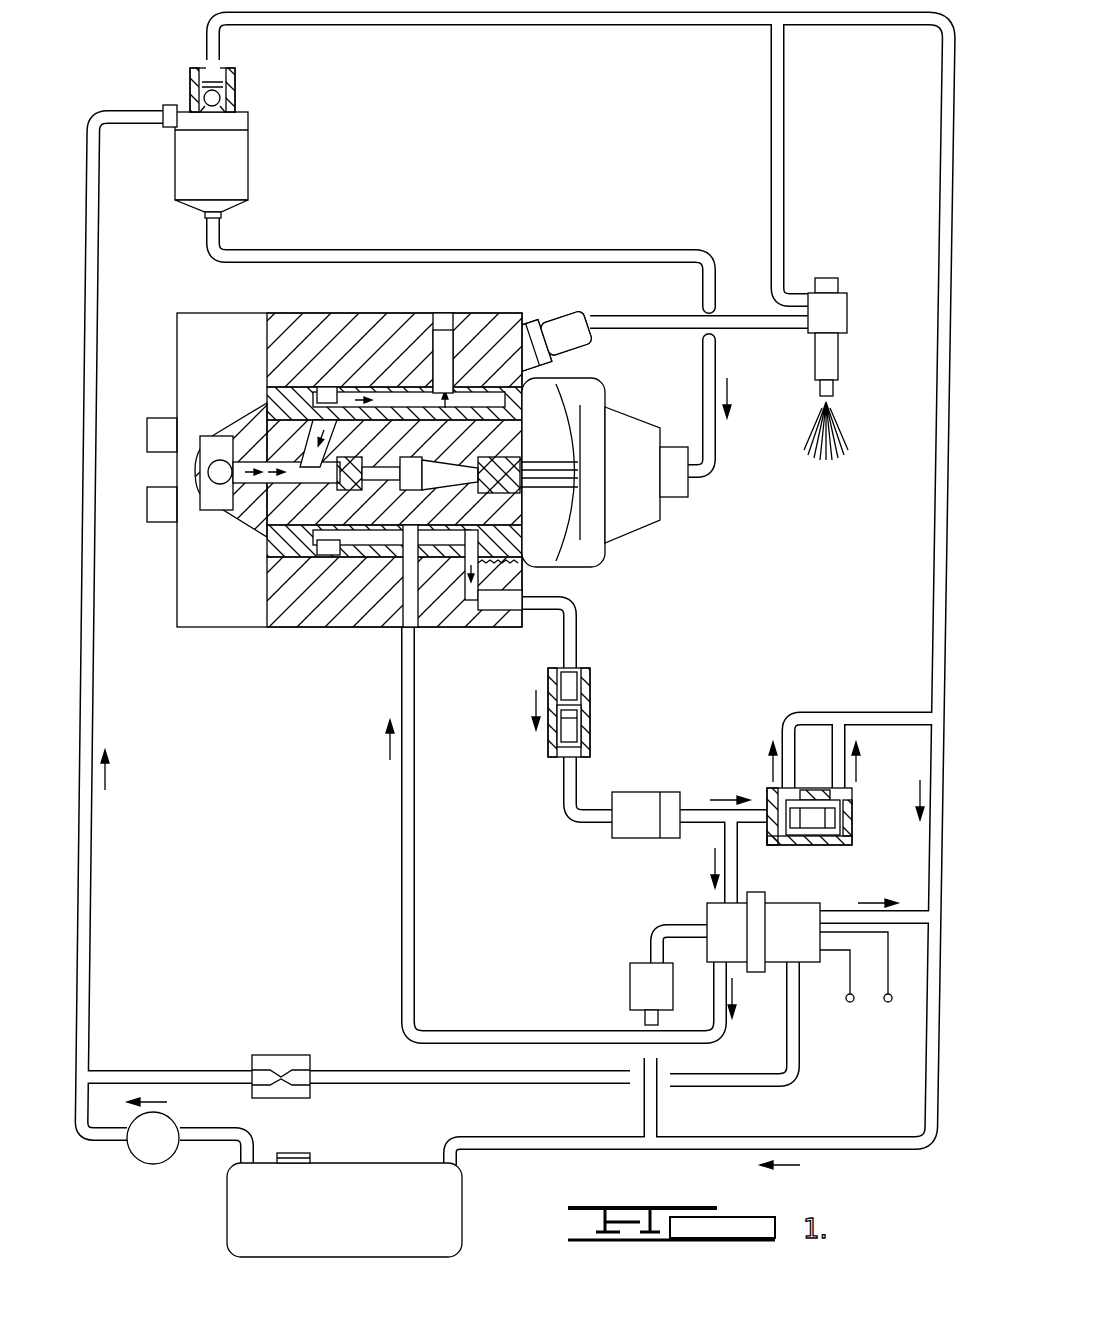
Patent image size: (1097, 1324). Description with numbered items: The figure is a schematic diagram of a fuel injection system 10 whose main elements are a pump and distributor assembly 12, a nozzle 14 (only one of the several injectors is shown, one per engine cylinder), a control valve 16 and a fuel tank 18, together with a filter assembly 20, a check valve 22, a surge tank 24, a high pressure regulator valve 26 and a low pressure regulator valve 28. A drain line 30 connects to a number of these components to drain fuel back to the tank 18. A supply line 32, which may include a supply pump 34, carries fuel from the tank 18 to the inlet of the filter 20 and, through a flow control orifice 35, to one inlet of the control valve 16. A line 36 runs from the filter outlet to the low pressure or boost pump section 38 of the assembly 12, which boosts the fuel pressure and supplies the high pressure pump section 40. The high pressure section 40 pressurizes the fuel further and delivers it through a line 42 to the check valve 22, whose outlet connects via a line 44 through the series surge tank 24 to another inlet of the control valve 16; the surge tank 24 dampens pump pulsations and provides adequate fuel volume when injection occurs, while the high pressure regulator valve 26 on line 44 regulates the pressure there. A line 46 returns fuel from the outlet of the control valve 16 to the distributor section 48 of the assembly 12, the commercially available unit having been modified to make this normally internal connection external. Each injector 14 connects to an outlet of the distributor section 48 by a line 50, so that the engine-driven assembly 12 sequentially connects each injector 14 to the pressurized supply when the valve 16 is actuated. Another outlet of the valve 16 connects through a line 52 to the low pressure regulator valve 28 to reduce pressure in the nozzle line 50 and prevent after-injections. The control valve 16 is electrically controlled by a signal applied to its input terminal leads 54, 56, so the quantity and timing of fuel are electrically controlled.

The fuel injection system 10 is at (272, 854).
The pump and distributor assembly 12 is at (204, 635).
The nozzle 14 is at (843, 380).
The control valve 16 is at (707, 905).
The fuel tank 18 is at (356, 1221).
The filter assembly 20 is at (248, 157).
The check valve 22 is at (548, 675).
The surge tank 24 is at (650, 792).
The high pressure regulator valve 26 is at (852, 800).
The low pressure regulator valve 28 is at (630, 975).
The drain line 30 is at (207, 30).
The supply line 32 is at (134, 130).
The supply pump 34 is at (153, 1166).
The flow control orifice 35 is at (292, 1056).
The line 36 is at (505, 249).
The boost pump section 38 is at (560, 448).
The high pressure pump section 40 is at (292, 515).
The line 42 is at (580, 627).
The line 44 is at (558, 790).
The line 46 is at (484, 1031).
The distributor section 48 is at (440, 374).
The line 50 is at (657, 329).
The line 52 is at (650, 930).
The input terminal lead 54 is at (848, 1002).
The input terminal lead 56 is at (886, 1002).